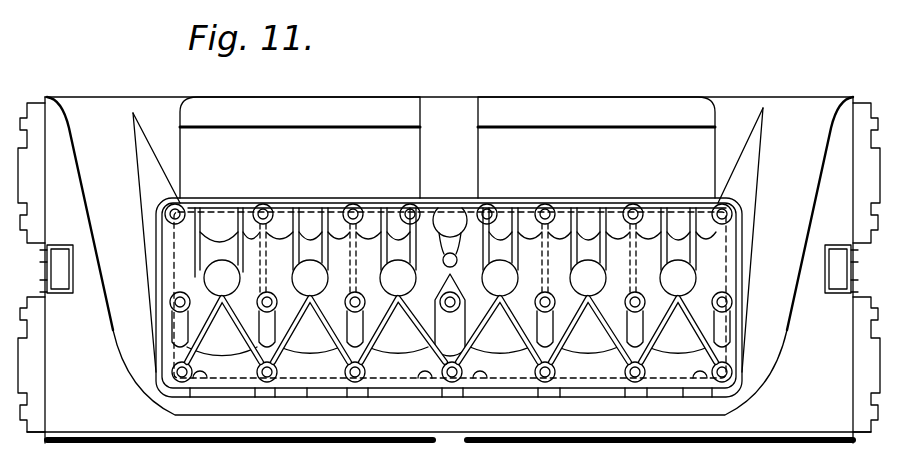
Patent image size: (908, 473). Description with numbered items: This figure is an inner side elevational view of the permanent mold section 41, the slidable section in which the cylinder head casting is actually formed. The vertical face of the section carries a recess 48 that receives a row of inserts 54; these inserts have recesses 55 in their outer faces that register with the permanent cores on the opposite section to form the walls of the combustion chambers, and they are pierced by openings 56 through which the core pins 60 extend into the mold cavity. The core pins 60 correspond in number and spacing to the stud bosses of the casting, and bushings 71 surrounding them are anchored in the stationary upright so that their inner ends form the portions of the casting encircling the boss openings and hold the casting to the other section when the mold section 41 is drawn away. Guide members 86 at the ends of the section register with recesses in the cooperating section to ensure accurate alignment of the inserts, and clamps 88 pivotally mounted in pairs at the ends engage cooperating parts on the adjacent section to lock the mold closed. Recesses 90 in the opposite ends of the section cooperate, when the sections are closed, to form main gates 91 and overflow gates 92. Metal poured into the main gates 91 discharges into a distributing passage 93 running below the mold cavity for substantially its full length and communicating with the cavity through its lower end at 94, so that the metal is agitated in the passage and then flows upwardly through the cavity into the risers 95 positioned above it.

The permanent mold section 41 is at (565, 107).
The recess 48 is at (157, 297).
The inserts 54 is at (307, 223).
The recesses 55 is at (283, 243).
The openings 56 is at (273, 290).
The core pins 60 is at (178, 213).
The bushings 71 is at (393, 200).
The guide members 86 is at (60, 283).
The clamps 88 is at (40, 420).
The recesses 90 is at (87, 187).
The main gates 91 is at (107, 148).
The overflow gates 92 is at (167, 140).
The distributing passage 93 is at (407, 408).
The communication with mold cavity 94 is at (230, 393).
The risers 95 is at (485, 127).